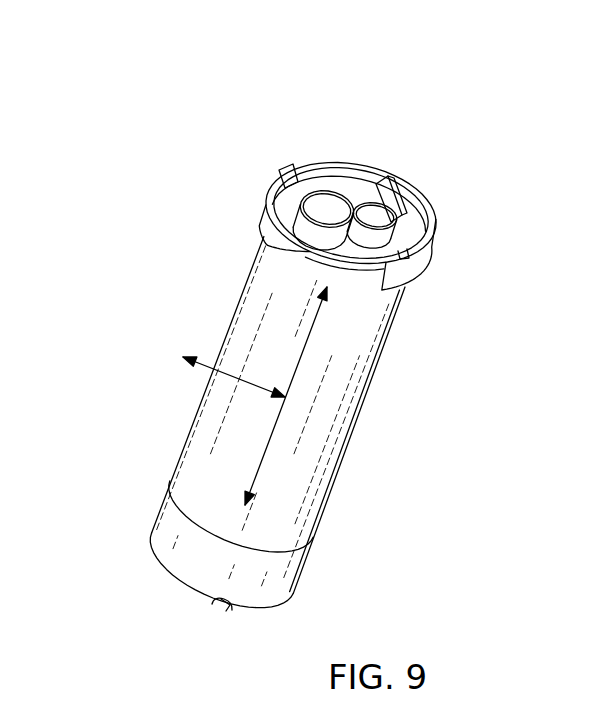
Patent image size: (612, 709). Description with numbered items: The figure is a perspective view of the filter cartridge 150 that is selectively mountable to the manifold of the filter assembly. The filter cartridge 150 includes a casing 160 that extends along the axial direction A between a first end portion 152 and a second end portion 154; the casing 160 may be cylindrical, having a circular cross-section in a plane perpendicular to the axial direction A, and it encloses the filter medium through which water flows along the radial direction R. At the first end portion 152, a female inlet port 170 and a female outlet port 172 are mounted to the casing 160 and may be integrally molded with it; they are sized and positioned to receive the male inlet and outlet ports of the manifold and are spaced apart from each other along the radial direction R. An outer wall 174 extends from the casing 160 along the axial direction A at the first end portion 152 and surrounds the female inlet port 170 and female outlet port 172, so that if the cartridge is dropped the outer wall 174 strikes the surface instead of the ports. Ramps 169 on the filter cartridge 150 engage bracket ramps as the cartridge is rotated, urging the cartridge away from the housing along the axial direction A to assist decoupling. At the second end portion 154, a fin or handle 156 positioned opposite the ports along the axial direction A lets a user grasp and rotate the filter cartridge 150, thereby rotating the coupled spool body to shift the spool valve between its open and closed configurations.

The filter cartridge 150 is at (102, 273).
The first end portion 152 is at (430, 265).
The second end portion 154 is at (303, 597).
The handle 156 is at (214, 604).
The casing 160 is at (337, 443).
The ramps 169 is at (399, 203).
The female inlet port 170 is at (374, 215).
The female outlet port 172 is at (330, 205).
The outer wall 174 is at (270, 213).
The axial direction A is at (302, 357).
The radial direction R is at (236, 378).